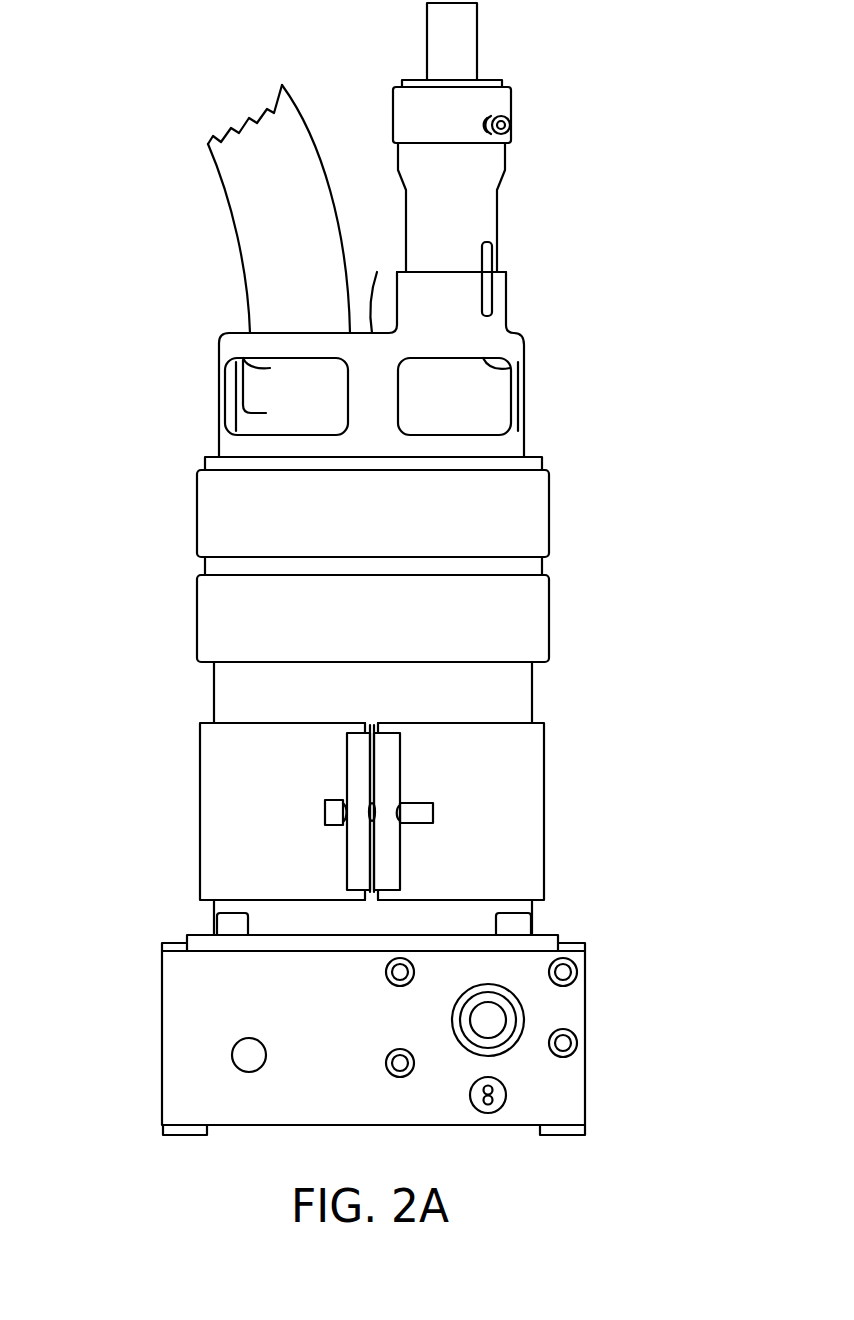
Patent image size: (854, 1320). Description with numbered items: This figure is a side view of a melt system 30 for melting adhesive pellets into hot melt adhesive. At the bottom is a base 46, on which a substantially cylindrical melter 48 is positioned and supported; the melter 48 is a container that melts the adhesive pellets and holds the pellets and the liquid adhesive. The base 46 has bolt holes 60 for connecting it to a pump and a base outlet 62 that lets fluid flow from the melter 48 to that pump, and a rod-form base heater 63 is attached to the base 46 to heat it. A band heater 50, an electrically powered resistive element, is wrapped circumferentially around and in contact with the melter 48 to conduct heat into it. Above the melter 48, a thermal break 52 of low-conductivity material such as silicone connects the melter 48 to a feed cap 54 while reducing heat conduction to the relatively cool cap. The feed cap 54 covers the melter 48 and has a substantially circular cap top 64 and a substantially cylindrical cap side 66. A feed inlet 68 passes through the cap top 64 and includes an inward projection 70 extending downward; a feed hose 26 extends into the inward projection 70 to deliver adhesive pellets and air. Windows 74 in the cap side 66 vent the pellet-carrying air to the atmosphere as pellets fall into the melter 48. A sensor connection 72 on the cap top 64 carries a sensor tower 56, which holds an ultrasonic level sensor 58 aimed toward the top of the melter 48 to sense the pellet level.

The feed hose 26 is at (228, 195).
The melt system 30 is at (663, 126).
The base 46 is at (158, 1043).
The melter 48 is at (214, 701).
The band heater 50 is at (200, 816).
The thermal break 52 is at (197, 513).
The feed cap 54 is at (213, 332).
The sensor tower 56 is at (503, 183).
The level sensor 58 is at (478, 28).
The bolt holes 60 is at (578, 970).
The base outlet 62 is at (525, 1012).
The base heater 63 is at (490, 1113).
The cap top 64 is at (375, 288).
The cap side 66 is at (532, 397).
The feed inlet 68 is at (274, 326).
The inward projection 70 is at (262, 416).
The sensor connection 72 is at (507, 278).
The windows 74 is at (258, 370).